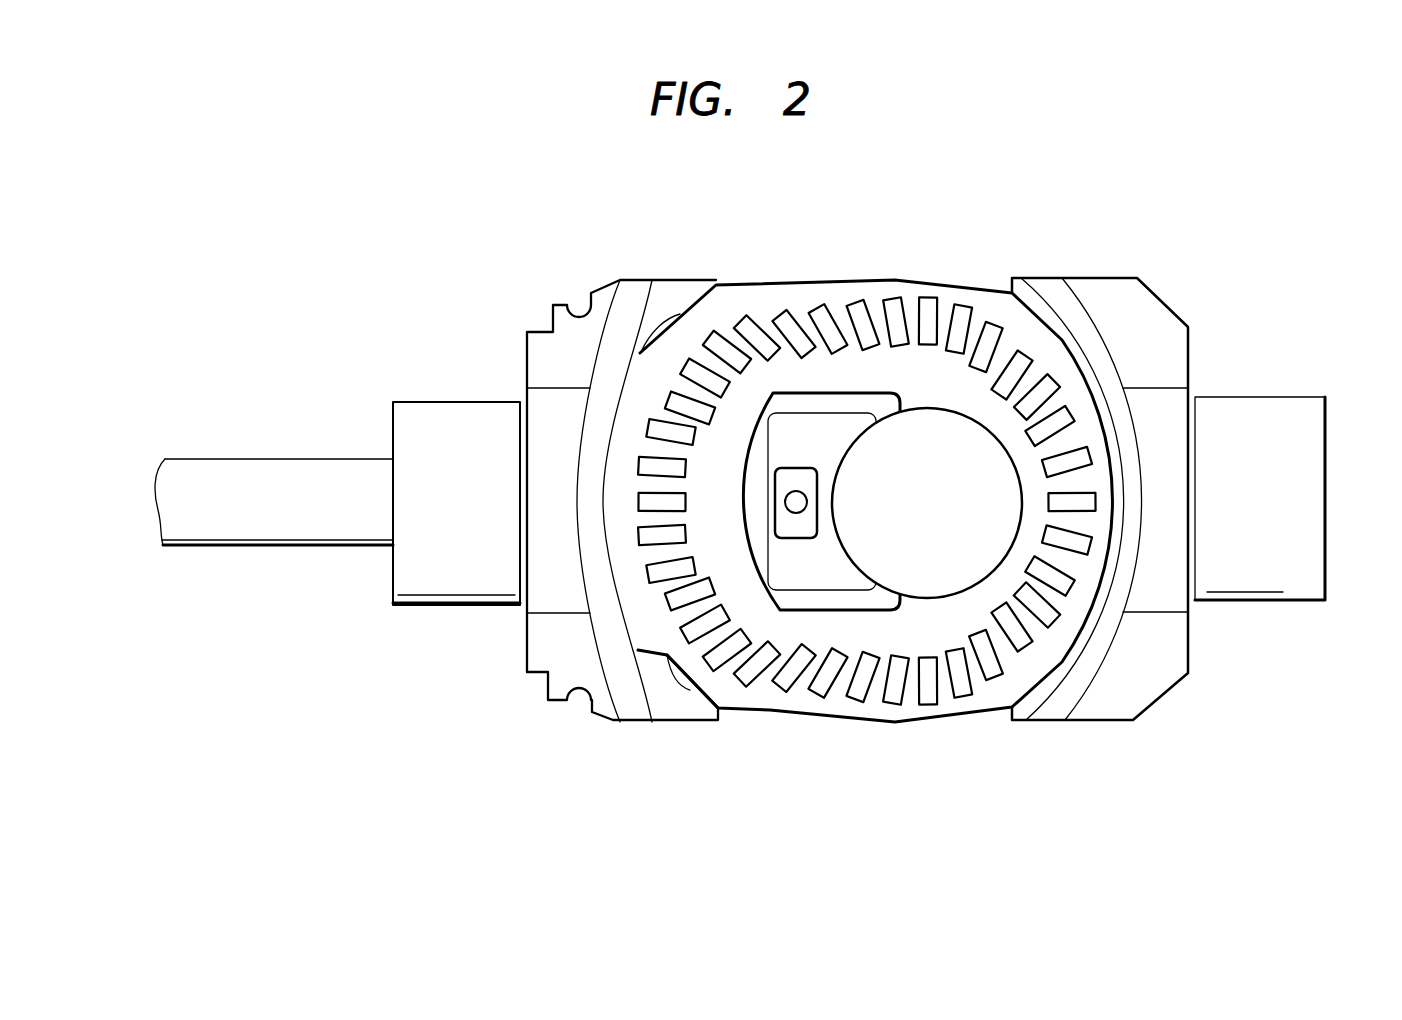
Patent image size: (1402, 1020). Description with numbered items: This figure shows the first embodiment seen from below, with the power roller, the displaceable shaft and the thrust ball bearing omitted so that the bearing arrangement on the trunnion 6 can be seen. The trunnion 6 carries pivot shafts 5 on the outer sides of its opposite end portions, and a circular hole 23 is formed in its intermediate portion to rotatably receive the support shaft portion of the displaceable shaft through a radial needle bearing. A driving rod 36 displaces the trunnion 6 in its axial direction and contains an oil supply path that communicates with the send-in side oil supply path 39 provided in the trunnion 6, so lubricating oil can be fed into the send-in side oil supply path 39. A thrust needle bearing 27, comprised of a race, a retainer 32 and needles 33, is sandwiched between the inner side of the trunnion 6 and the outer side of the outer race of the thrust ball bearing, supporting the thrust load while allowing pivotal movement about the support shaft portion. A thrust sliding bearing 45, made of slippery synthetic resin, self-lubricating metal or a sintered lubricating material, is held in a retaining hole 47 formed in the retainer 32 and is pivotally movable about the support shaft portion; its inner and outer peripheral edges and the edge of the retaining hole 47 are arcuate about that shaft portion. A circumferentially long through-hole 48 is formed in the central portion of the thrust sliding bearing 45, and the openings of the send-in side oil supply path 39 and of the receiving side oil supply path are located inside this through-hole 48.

The pivot shaft 5 is at (453, 588).
The trunnion 6 is at (1150, 324).
The circular hole 23 is at (924, 410).
The thrust needle bearing 27 is at (757, 686).
The retainer 32 is at (975, 700).
The needle 33 is at (1052, 375).
The driving rod 36 is at (272, 535).
The send-in side oil supply path 39 is at (783, 497).
The thrust sliding bearing 45 is at (828, 575).
The retaining hole 47 is at (864, 600).
The through-hole 48 is at (808, 468).